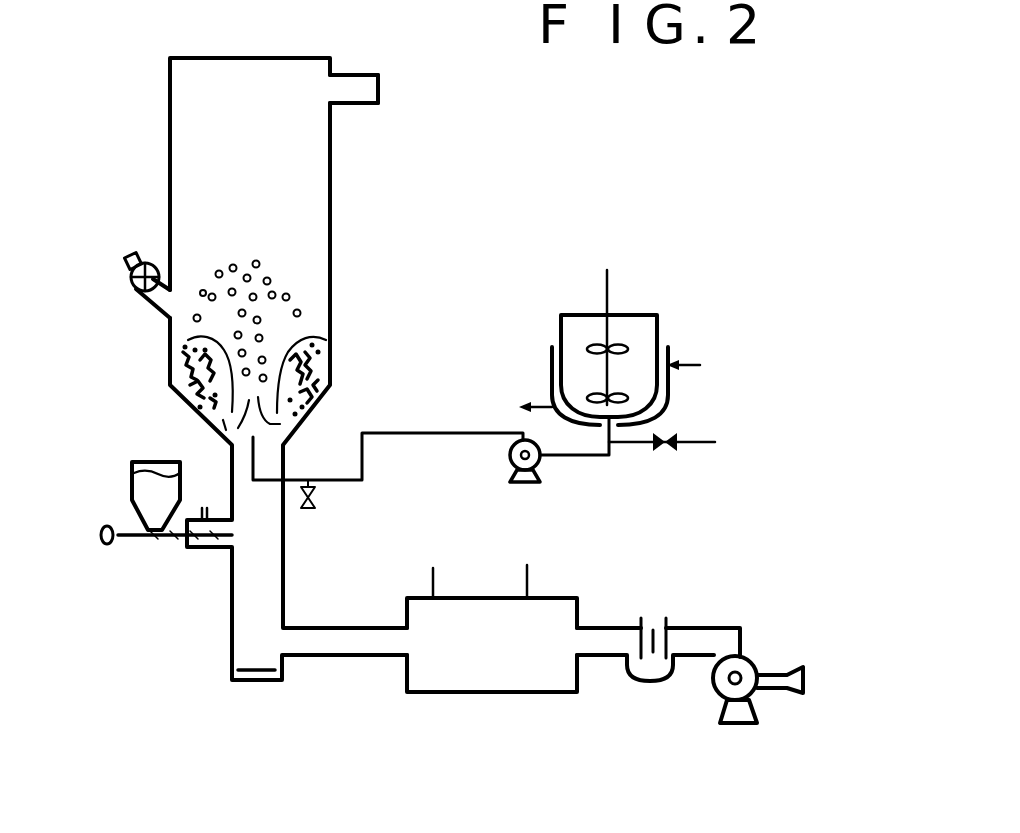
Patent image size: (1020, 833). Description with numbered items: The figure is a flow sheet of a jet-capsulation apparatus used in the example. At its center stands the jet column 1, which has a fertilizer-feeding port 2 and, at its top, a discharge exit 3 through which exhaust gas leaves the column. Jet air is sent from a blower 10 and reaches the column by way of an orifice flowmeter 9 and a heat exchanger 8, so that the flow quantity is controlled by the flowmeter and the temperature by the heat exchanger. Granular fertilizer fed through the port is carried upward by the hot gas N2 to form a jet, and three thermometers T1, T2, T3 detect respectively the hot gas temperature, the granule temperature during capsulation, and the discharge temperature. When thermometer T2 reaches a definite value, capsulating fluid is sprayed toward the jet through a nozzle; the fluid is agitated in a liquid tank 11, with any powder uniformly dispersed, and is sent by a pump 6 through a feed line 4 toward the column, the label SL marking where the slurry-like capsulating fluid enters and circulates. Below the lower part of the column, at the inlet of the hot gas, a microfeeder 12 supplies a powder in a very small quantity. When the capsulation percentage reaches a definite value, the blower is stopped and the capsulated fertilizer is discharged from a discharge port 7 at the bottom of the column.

The jet column 1 is at (170, 100).
The fertilizer-feeding port 2 is at (136, 294).
The discharge exit 3 is at (363, 77).
The slurry feed pipe 4 is at (262, 462).
The pump 6 is at (510, 456).
The discharge port 7 is at (255, 682).
The heat exchanger 8 is at (493, 693).
The orifice flowmeter 9 is at (653, 630).
The blower 10 is at (757, 661).
The liquid tank 11 is at (637, 317).
The microfeeder 12 is at (131, 480).
The thermometer T1 is at (243, 605).
The thermometer T2 is at (333, 356).
The thermometer T3 is at (318, 188).
The slurry SL is at (576, 475).
The N2 gas N2 is at (203, 497).